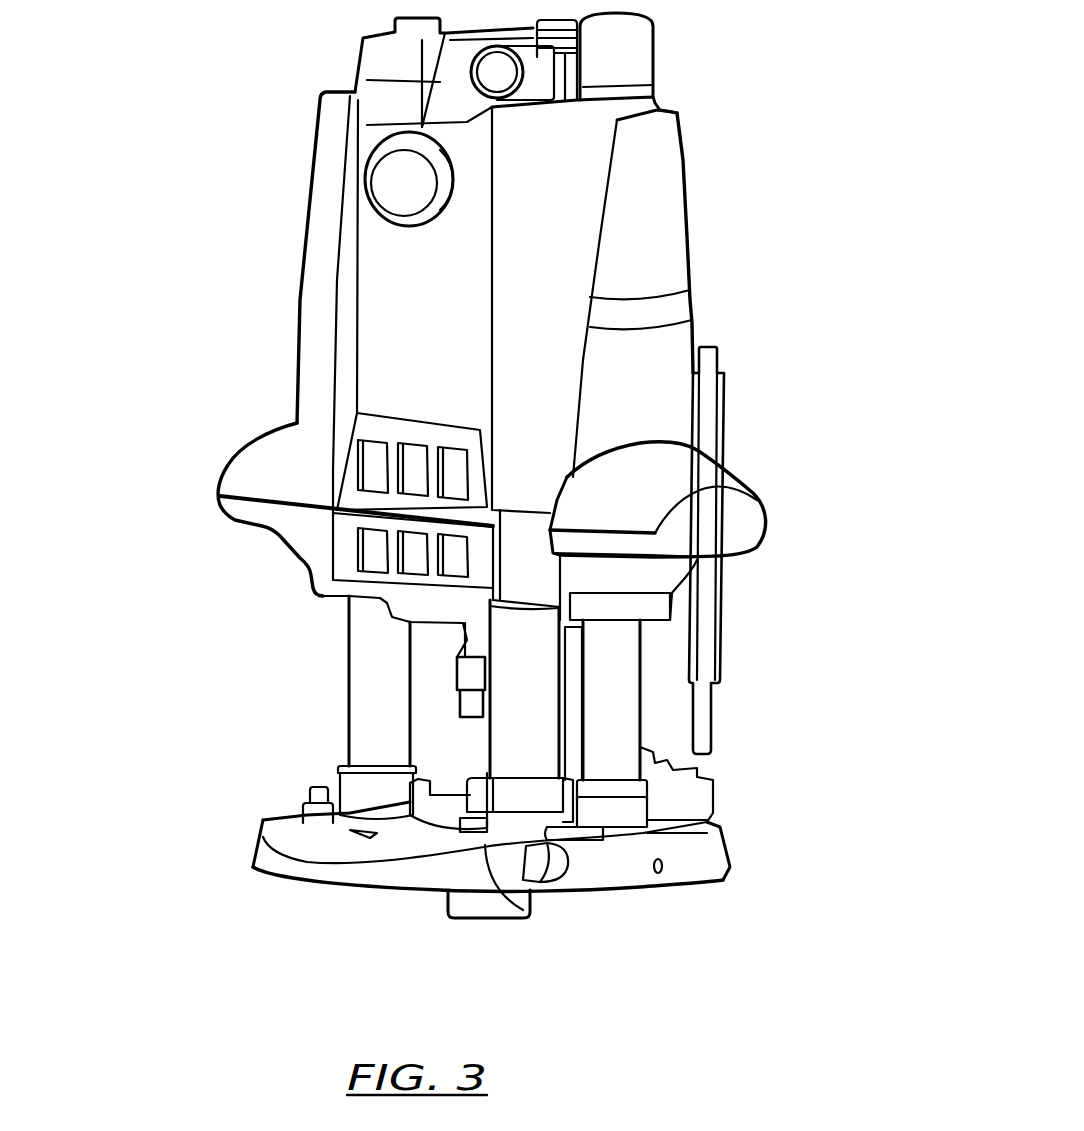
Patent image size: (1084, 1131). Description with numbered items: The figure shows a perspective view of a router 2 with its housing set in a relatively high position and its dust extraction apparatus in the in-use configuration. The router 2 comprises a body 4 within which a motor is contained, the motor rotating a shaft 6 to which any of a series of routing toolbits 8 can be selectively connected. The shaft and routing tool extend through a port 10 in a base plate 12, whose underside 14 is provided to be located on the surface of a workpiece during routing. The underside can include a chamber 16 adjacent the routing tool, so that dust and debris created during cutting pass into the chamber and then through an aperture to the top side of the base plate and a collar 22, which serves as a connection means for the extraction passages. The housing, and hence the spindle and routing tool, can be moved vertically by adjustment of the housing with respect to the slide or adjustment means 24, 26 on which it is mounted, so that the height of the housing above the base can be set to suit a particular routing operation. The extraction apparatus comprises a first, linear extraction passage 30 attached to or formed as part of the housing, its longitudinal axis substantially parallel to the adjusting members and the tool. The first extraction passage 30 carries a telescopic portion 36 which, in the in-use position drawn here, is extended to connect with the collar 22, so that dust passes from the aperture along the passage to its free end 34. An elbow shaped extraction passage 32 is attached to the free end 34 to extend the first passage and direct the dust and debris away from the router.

The router 2 is at (284, 200).
The body 4 is at (418, 312).
The shaft 6 is at (467, 638).
The routing toolbit 8 is at (460, 686).
The port 10 is at (410, 803).
The base plate 12 is at (267, 855).
The underside of the base plate 14 is at (287, 882).
The chamber 16 is at (448, 918).
The collar 22 is at (525, 913).
The slide or adjustment means 24 is at (360, 608).
The slide or adjustment means 26 is at (603, 740).
The first linear extraction passage 30 is at (553, 428).
The elbow shaped extraction passage 32 is at (548, 76).
The free end 34 is at (572, 115).
The telescopic portion 36 is at (518, 672).